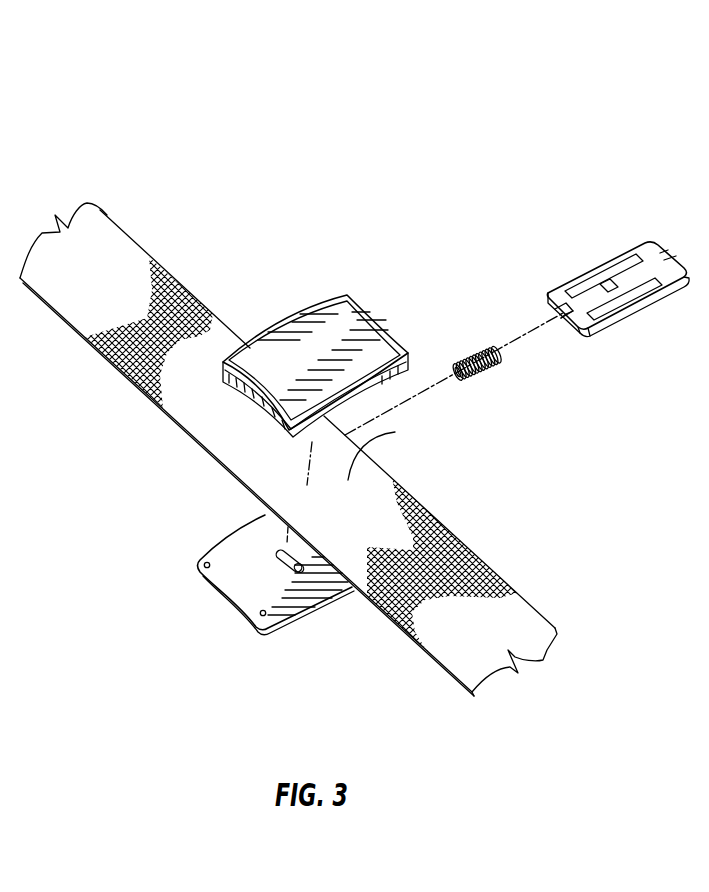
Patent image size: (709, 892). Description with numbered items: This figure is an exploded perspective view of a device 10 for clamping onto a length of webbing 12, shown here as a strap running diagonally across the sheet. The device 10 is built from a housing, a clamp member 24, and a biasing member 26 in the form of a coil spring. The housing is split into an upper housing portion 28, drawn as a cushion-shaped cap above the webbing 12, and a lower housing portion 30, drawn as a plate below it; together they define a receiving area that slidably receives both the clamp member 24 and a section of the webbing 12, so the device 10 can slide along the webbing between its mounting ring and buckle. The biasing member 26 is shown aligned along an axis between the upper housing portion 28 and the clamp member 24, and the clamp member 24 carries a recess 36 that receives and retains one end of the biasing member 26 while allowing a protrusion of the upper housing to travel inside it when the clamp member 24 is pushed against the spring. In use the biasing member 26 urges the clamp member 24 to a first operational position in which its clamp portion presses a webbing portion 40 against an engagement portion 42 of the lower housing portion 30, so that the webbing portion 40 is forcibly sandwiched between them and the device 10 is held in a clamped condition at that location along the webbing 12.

The device 10 is at (277, 119).
The webbing 12 is at (128, 233).
The clamp member 24 is at (648, 238).
The biasing member 26 is at (461, 362).
The upper housing portion 28 is at (305, 305).
The lower housing portion 30 is at (213, 582).
The recess 36 is at (570, 313).
The webbing portion 40 is at (395, 432).
The engagement portion 42 is at (285, 573).